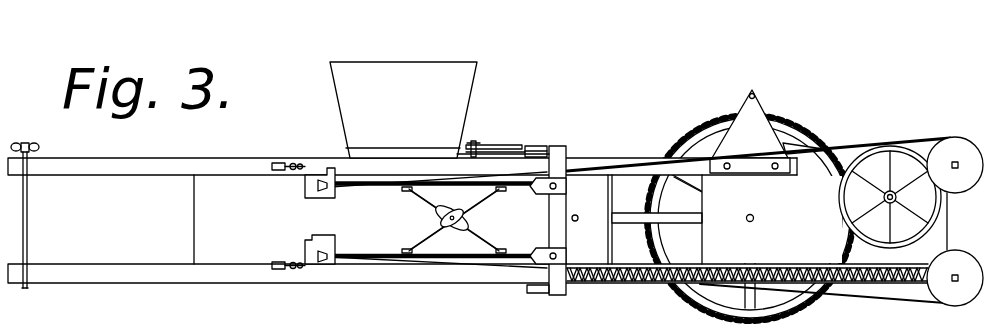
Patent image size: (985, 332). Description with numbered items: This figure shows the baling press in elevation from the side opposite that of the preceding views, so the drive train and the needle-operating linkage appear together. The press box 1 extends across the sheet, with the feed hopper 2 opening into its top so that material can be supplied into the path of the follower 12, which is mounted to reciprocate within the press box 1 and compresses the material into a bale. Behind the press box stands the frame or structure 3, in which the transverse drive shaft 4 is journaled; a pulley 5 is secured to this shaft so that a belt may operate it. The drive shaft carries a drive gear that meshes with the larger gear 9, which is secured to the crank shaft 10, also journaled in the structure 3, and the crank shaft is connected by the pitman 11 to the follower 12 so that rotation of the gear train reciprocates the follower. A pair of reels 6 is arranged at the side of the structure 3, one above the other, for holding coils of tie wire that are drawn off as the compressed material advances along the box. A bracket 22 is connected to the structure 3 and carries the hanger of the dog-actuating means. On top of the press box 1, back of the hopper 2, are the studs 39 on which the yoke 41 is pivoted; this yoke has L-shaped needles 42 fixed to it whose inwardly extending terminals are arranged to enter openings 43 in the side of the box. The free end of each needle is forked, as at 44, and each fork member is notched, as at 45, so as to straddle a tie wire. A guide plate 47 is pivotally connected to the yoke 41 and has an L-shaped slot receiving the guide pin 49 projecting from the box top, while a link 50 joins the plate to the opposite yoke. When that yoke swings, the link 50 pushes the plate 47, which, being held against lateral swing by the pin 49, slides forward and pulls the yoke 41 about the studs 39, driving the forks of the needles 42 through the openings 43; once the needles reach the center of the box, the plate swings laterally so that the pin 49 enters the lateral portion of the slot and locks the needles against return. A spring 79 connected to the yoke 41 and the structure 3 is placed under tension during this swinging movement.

The press box 1 is at (223, 192).
The feed hopper 2 is at (466, 92).
The frame or structure 3 is at (618, 168).
The transverse drive shaft 4 is at (855, 228).
The pulley 5 is at (940, 226).
The reels 6 is at (957, 140).
The larger gear 9 is at (706, 125).
The crank shaft 10 is at (755, 218).
The pitman 11 is at (637, 215).
The follower 12 is at (592, 250).
The bracket 22 is at (758, 105).
The studs 39 is at (536, 145).
The yoke 41 is at (558, 150).
The L-shaped needles 42 is at (372, 190).
The openings 43 is at (305, 245).
The fork 44 is at (330, 222).
The notch 45 is at (322, 175).
The guide plate 47 is at (490, 152).
The guide pin 49 is at (474, 140).
The link 50 is at (492, 147).
The spring 79 is at (853, 287).